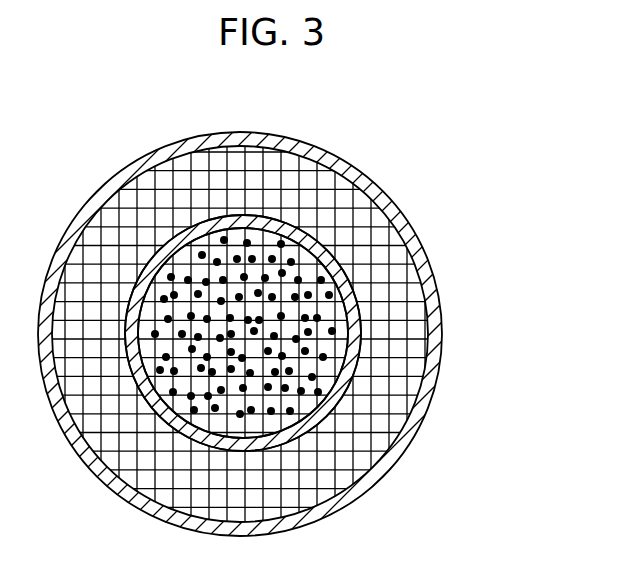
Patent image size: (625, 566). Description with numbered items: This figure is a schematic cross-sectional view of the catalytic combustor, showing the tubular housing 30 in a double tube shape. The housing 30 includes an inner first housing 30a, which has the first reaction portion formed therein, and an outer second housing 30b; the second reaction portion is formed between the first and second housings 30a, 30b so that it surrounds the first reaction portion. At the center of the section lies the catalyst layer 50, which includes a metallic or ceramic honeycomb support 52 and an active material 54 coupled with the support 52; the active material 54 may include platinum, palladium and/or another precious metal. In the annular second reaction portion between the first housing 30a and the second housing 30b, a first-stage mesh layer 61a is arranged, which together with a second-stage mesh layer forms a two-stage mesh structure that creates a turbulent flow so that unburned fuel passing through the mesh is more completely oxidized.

The housing 30 is at (312, 321).
The first housing 30a is at (350, 364).
The second housing 30b is at (343, 165).
The catalyst layer 50 is at (300, 303).
The honeycomb support 52 is at (297, 267).
The active material 54 is at (295, 228).
The first-stage mesh layer 61a is at (397, 372).